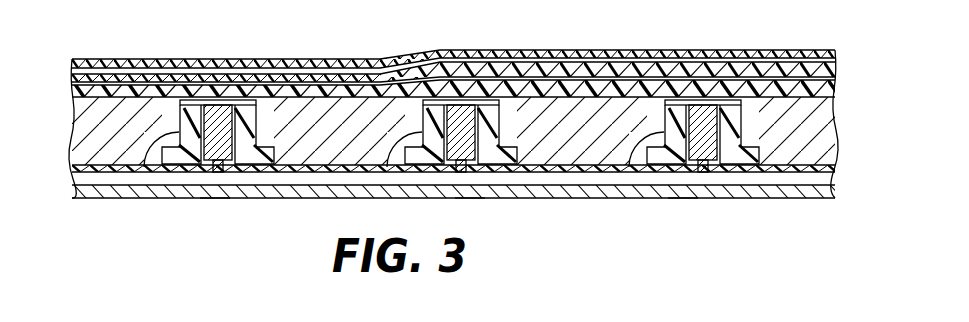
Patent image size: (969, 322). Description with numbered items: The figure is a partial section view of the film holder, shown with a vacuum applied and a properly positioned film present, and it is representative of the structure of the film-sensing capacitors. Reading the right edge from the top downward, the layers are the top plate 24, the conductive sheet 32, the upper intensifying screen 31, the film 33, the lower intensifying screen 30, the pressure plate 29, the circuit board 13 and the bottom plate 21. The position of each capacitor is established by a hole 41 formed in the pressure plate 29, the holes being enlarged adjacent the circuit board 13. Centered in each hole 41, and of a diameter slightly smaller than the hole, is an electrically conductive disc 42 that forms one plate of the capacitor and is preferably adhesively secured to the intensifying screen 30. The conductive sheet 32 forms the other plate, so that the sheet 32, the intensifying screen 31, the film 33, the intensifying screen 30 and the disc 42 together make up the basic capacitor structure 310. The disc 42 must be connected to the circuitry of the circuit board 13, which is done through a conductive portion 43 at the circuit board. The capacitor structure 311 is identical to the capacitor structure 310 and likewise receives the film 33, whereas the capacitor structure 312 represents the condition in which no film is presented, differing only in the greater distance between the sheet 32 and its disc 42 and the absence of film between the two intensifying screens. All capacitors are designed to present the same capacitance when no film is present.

The circuit board 13 is at (835, 167).
The bottom plate 21 is at (833, 193).
The top plate 24 is at (808, 50).
The pressure plate 29 is at (827, 137).
The intensifying screen 30 is at (837, 97).
The intensifying screen 31 is at (837, 70).
The conductive sheet 32 is at (837, 58).
The film 33 is at (837, 80).
The hole 41 is at (144, 167).
The electrically conductive disc 42 is at (183, 108).
The conductive portion 43 is at (703, 173).
The capacitor structure 310 is at (680, 208).
The capacitor structure 311 is at (471, 209).
The capacitor structure 312 is at (211, 206).